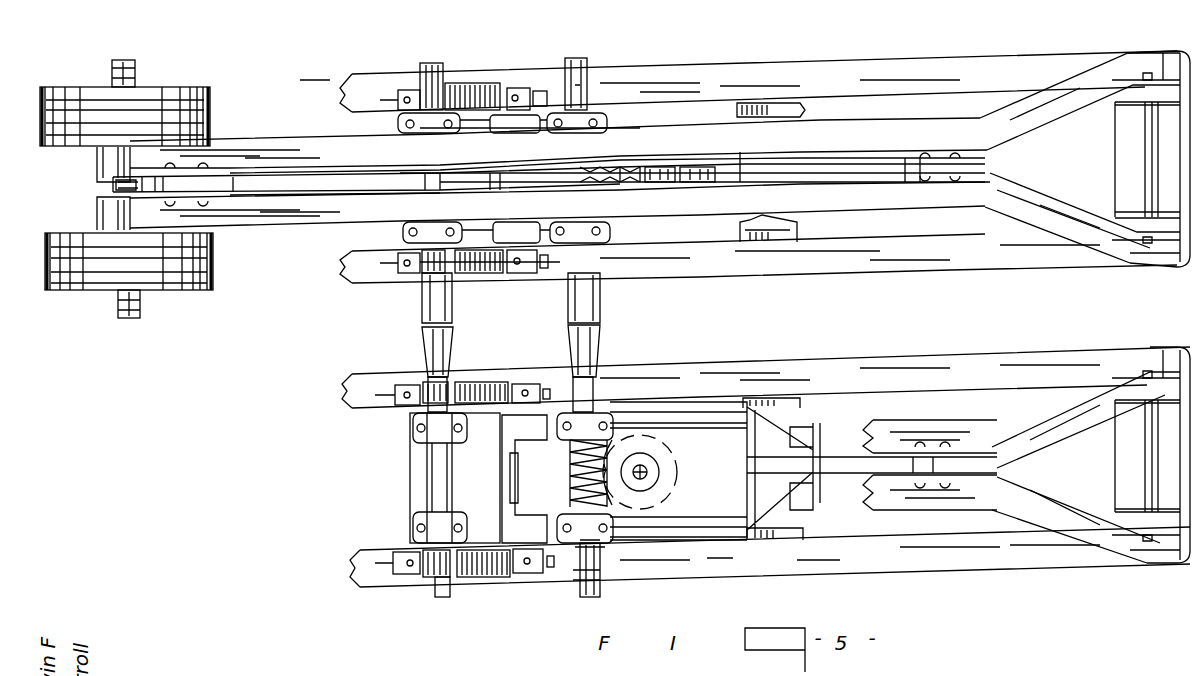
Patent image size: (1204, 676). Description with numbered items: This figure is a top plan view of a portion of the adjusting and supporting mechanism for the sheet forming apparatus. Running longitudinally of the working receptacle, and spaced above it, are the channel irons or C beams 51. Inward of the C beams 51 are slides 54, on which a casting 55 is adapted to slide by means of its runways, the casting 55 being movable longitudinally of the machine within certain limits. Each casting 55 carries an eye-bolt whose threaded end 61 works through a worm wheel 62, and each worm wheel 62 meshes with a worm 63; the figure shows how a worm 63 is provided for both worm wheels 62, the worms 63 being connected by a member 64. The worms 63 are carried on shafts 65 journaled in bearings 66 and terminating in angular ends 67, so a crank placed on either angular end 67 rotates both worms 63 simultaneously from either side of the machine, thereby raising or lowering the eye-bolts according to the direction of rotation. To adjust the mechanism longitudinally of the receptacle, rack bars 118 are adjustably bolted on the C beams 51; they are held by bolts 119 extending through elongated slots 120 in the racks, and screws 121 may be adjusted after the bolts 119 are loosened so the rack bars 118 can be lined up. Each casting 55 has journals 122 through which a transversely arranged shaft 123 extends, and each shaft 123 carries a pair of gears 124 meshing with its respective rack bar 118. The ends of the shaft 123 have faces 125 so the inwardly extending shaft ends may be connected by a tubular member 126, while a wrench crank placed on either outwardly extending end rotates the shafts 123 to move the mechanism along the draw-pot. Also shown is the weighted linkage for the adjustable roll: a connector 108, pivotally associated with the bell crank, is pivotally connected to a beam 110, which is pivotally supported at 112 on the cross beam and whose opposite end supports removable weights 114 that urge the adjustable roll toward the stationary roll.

The C beams 51 is at (690, 72).
The slides 54 is at (803, 111).
The casting 55 is at (480, 432).
The threaded end 61 is at (652, 168).
The worm wheel 62 is at (700, 172).
The worm 63 is at (600, 170).
The member 64 is at (603, 340).
The shafts 65 is at (590, 96).
The bearings 66 is at (612, 540).
The angular ends 67 is at (582, 60).
The connector 108 is at (950, 163).
The beam 110 is at (372, 213).
The pivot 112 is at (1143, 147).
The removable weights 114 is at (145, 95).
The rack bars 118 is at (447, 82).
The bolts 119 is at (522, 94).
The elongated slots 120 is at (510, 88).
The screws 121 is at (345, 99).
The journals 122 is at (418, 430).
The shaft 123 is at (415, 168).
The gears 124 is at (398, 78).
The faces 125 is at (432, 62).
The tubular member 126 is at (423, 300).